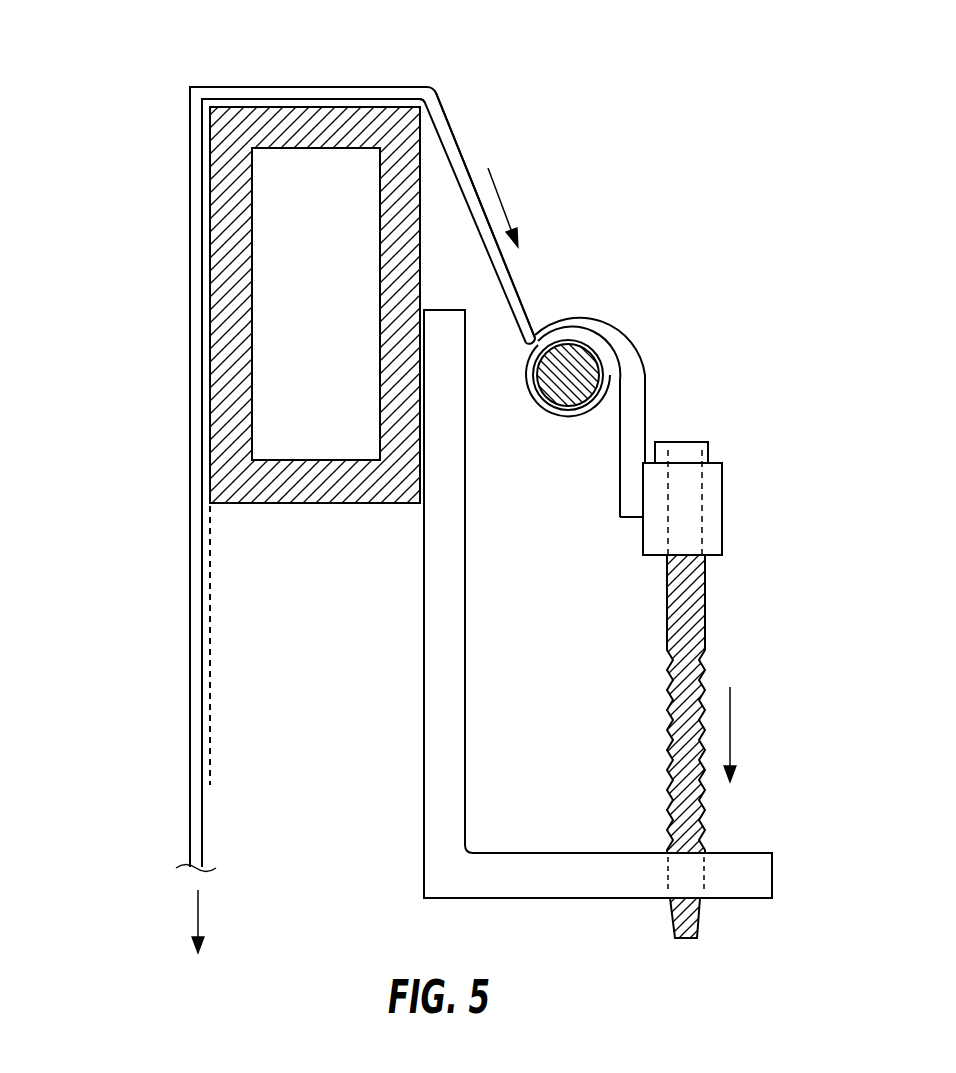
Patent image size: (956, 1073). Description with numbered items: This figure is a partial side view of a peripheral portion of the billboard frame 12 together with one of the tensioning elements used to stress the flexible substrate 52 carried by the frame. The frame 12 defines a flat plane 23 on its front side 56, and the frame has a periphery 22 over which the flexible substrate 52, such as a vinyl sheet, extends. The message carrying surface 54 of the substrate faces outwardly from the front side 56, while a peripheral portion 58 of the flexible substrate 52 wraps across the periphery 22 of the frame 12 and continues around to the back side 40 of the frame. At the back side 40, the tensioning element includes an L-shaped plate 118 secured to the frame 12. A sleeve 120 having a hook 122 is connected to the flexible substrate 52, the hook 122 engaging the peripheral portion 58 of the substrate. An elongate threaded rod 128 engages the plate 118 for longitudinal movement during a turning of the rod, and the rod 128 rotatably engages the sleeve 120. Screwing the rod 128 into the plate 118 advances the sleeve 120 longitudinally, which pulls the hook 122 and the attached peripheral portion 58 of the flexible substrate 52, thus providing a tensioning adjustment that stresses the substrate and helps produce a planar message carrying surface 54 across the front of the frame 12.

The frame 12 is at (278, 492).
The periphery 22 is at (346, 108).
The flat plane 23 is at (212, 685).
The back side 40 is at (600, 248).
The flexible substrate 52 is at (190, 253).
The message carrying surface 54 is at (188, 548).
The front side 56 is at (145, 457).
The peripheral portion 58 is at (453, 125).
The L-shaped plate 118 is at (432, 798).
The sleeve 120 is at (712, 522).
The hook 122 is at (645, 345).
The elongate threaded rod 128 is at (707, 827).